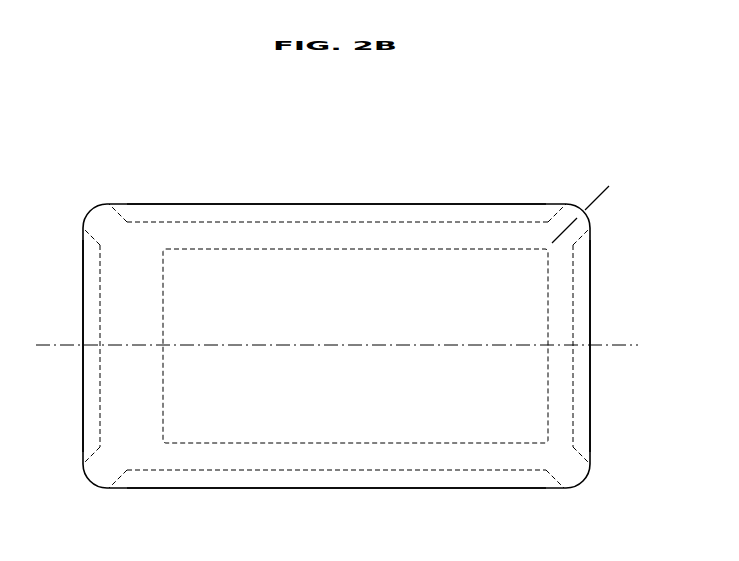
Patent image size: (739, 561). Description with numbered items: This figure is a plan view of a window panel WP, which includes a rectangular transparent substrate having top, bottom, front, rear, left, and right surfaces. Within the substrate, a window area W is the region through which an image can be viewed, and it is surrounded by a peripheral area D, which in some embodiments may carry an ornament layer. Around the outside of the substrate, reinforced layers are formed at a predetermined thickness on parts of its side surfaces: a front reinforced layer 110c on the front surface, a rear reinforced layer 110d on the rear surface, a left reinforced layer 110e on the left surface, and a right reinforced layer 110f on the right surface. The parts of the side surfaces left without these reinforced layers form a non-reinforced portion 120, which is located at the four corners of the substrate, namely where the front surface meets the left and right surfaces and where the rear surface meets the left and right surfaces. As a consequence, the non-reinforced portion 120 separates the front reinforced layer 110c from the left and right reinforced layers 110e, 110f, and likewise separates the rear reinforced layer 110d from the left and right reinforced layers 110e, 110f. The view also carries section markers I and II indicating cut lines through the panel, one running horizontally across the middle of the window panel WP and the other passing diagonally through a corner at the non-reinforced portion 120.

The non-reinforced portion 120 is at (103, 222).
The front reinforced layer 110c is at (337, 488).
The rear reinforced layer 110d is at (337, 218).
The left reinforced layer 110e is at (90, 310).
The right reinforced layer 110f is at (585, 308).
The peripheral area D is at (137, 243).
The window area W is at (438, 263).
The window panel WP is at (336, 307).
The section line I-I' I is at (50, 346).
The section line II-II' II is at (538, 257).